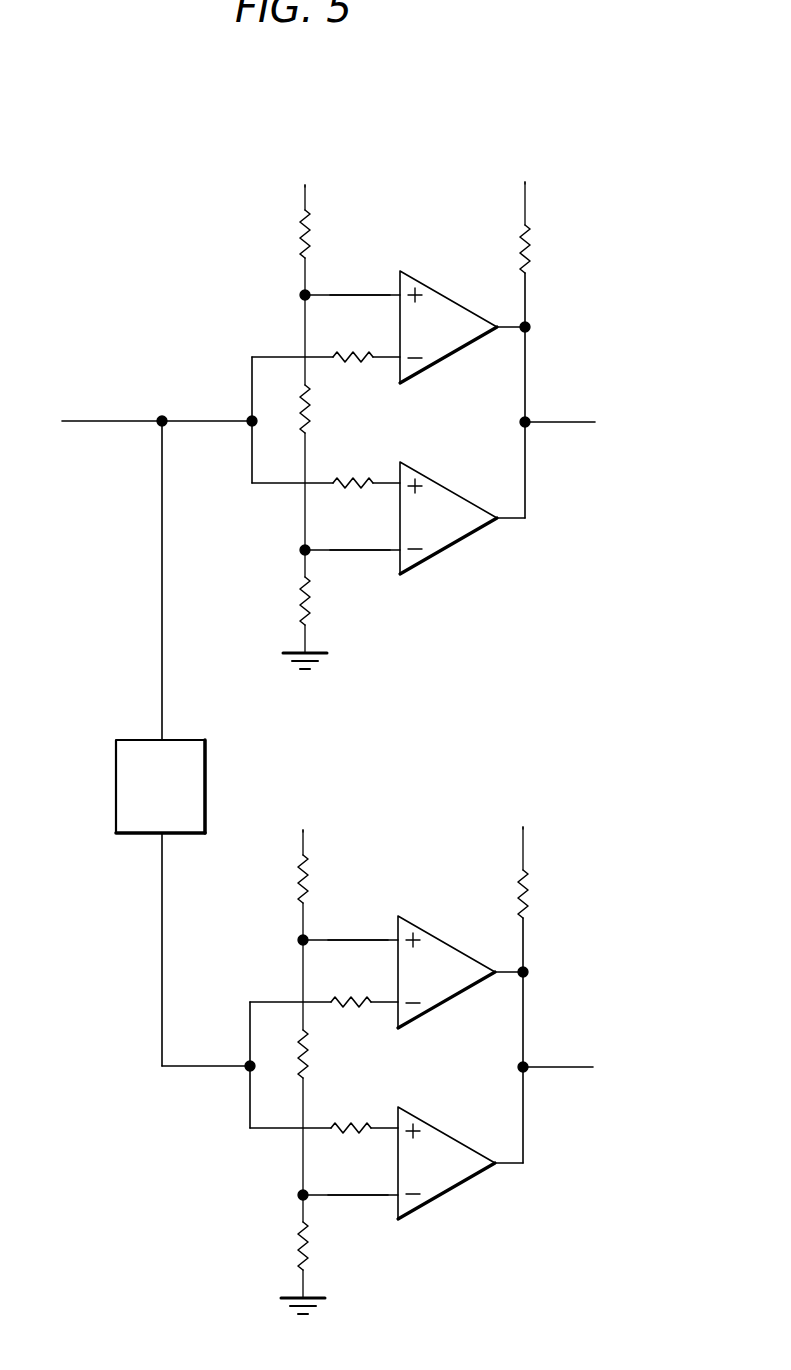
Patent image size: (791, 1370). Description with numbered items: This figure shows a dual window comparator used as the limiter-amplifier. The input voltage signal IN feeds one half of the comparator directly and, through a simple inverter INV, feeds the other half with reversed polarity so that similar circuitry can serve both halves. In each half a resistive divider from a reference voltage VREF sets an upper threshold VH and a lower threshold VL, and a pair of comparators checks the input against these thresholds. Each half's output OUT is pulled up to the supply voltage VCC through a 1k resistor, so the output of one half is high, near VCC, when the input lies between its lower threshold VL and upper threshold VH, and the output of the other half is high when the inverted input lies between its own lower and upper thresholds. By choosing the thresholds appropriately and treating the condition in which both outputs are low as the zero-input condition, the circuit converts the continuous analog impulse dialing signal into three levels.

The 1k pull-up resistor 1k is at (541, 550).
The supply voltage VCC is at (526, 487).
The reference voltage input VREF is at (327, 488).
The upper threshold voltage VH is at (359, 598).
The lower threshold voltage VL is at (359, 853).
The window comparator output OUT is at (601, 745).
The input voltage signal IN is at (139, 422).
The inverter INV is at (183, 743).